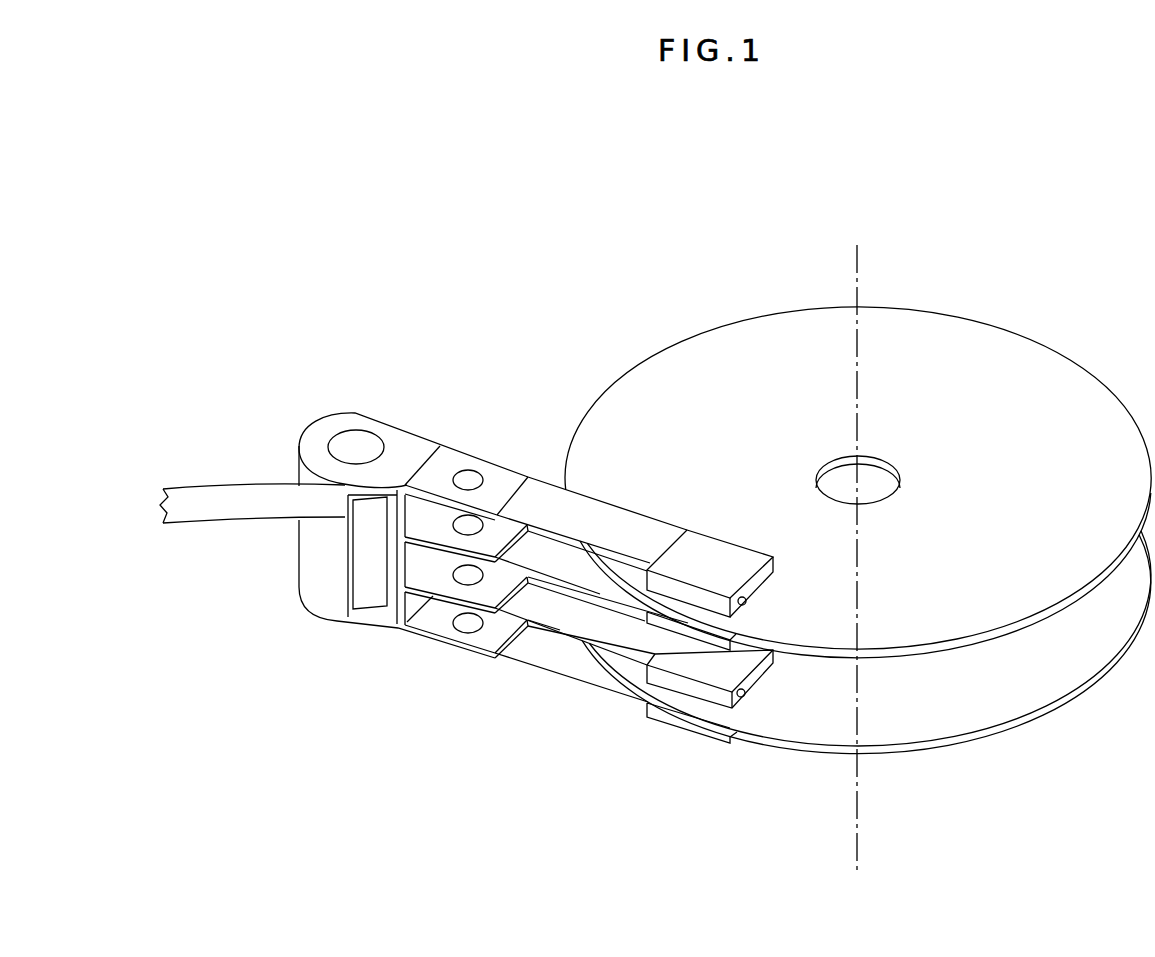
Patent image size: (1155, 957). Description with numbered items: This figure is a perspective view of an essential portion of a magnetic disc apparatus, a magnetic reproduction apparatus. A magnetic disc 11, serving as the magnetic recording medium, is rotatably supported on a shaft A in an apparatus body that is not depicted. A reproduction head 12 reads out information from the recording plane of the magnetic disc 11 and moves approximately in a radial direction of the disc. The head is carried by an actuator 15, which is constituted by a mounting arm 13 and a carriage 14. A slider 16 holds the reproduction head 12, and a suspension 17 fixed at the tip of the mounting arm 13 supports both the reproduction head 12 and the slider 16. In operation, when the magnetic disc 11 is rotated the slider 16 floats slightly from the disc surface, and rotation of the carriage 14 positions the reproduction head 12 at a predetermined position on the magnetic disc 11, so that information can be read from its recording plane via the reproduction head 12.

The magnetic disc 11 is at (1069, 369).
The reproduction head 12 is at (745, 694).
The mounting arm 13 is at (455, 457).
The carriage 14 is at (313, 443).
The actuator 15 is at (365, 413).
The slider 16 is at (668, 717).
The suspension 17 is at (611, 526).
The shaft A is at (860, 268).